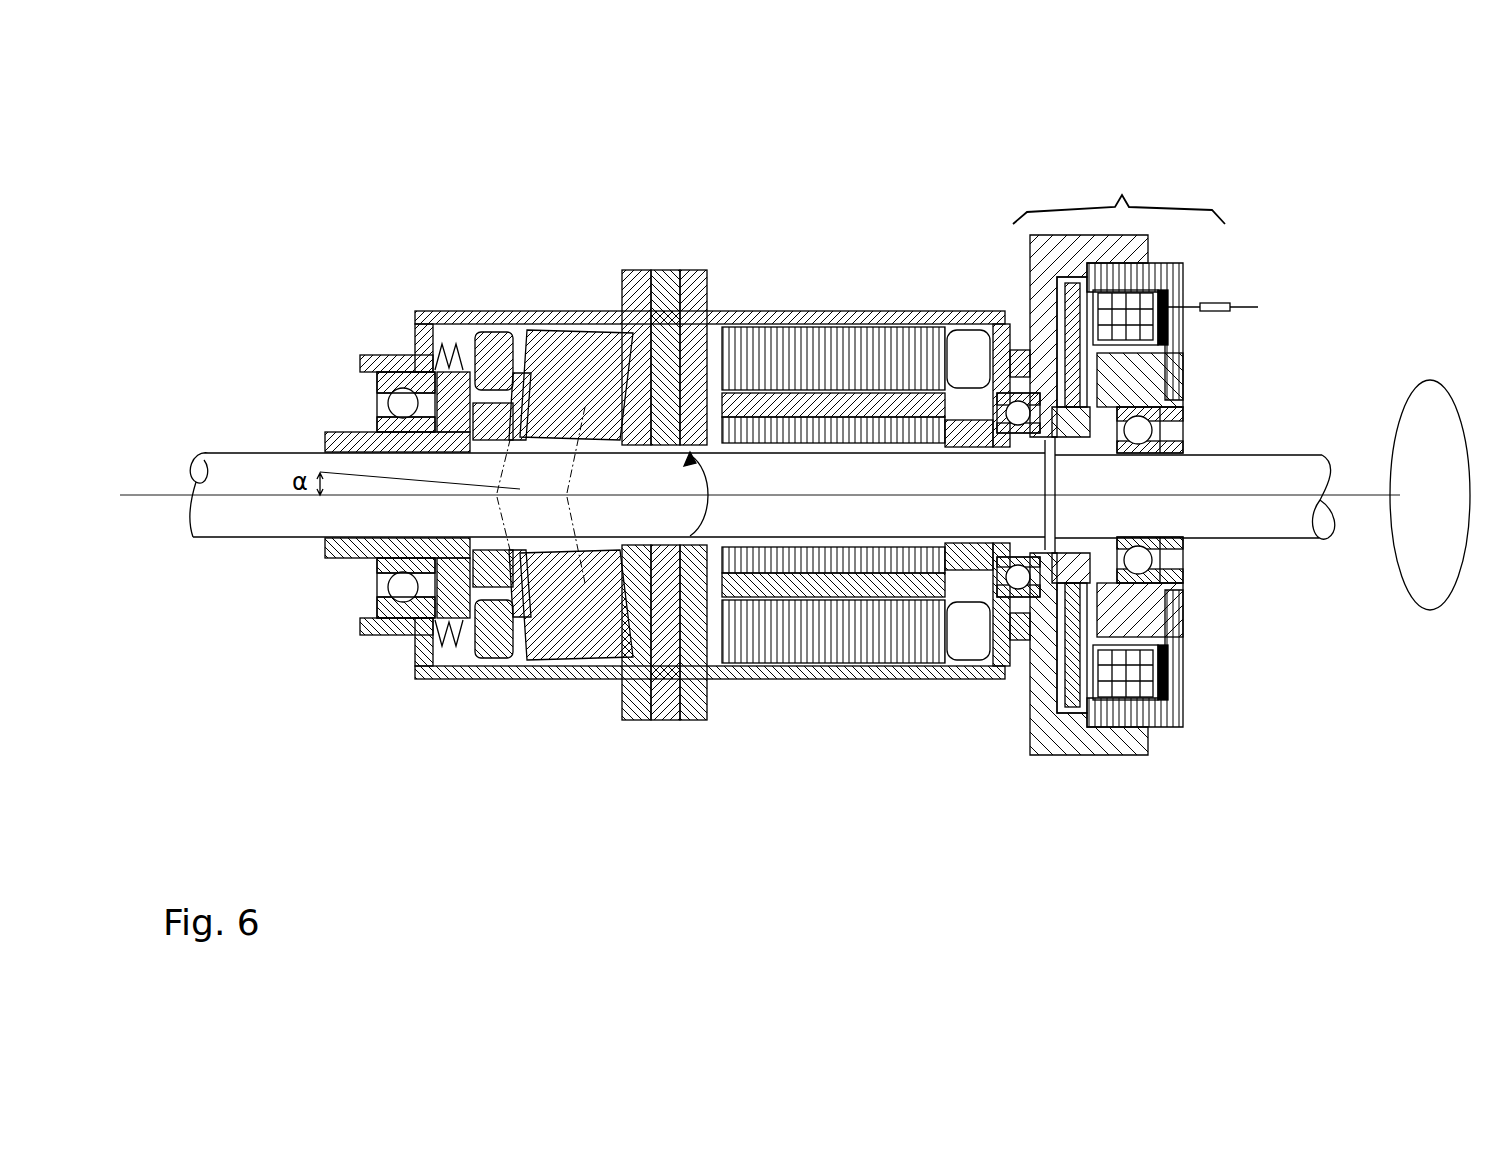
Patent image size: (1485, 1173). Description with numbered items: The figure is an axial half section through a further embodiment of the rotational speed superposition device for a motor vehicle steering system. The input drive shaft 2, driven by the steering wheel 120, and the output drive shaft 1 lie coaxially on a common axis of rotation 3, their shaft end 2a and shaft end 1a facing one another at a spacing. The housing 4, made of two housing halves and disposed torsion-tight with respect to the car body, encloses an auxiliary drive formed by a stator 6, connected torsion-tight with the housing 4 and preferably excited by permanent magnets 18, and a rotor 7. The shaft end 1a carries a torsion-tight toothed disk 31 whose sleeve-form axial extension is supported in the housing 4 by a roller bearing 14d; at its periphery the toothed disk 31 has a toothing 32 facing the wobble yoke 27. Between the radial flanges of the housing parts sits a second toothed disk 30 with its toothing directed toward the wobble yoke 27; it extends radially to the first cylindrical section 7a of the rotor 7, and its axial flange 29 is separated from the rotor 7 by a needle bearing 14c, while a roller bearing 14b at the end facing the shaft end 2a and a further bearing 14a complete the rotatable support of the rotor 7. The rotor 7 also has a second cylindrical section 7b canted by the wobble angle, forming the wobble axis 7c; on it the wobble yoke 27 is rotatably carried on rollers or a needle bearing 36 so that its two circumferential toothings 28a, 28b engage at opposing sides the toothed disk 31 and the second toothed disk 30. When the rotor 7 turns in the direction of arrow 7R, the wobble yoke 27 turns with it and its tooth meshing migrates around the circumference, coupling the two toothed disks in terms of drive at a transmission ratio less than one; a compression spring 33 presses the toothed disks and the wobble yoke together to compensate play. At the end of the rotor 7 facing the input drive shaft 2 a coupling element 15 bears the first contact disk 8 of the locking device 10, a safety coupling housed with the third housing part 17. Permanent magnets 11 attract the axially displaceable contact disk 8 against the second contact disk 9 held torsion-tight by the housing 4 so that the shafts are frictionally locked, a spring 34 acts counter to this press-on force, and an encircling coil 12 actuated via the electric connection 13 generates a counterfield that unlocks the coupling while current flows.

The output drive shaft 1 is at (200, 470).
The shaft end of the output drive shaft 1a is at (418, 384).
The input drive shaft 2 is at (1253, 478).
The shaft end of the input drive shaft 2a is at (1105, 515).
The axis of rotation 3 is at (253, 493).
The housing 4 is at (433, 318).
The stator 6 is at (822, 356).
The rotor 7 is at (957, 432).
The first cylindrical section of the rotor 7a is at (833, 517).
The second cylindrical section of the rotor 7b is at (443, 642).
The wobble axis 7c is at (360, 475).
The arrow 7R is at (722, 494).
The first contact disk 8 is at (1068, 678).
The second contact disk 9 is at (1085, 658).
The locking device 10 is at (1119, 189).
The permanent magnet 11 is at (1153, 578).
The coil 12 is at (1130, 660).
The electric connection 13 is at (1209, 306).
The bearing seat 14a is at (1183, 622).
The roller bearing 14b is at (1002, 585).
The needle bearing 14c is at (705, 660).
The roller bearing 14d is at (390, 587).
The coupling element 15 is at (1072, 425).
The third housing part 17 is at (1040, 712).
The permanent magnets 18 is at (752, 428).
The wobble yoke 27 is at (578, 373).
The circumferential toothing 28a is at (527, 363).
The circumferential toothing 28b is at (553, 550).
The axial flange of the toothed disk 29 is at (638, 640).
The second toothed disk 30 is at (610, 647).
The toothed disk 31 is at (480, 332).
The toothing 32 is at (500, 347).
The compression spring 33 is at (415, 678).
The spring 34 is at (1088, 383).
The needle bearing 36 is at (542, 508).
The steering wheel 120 is at (1424, 607).